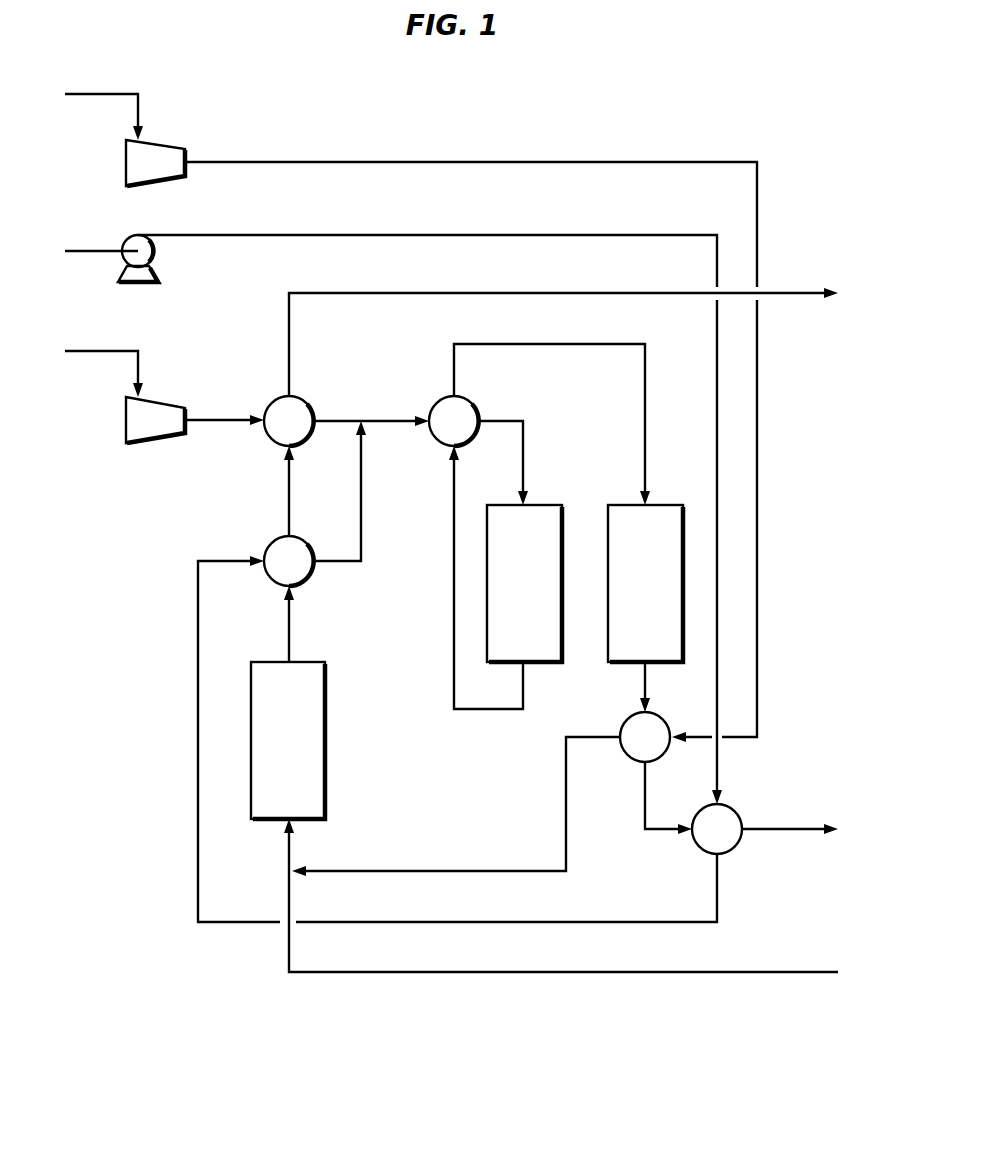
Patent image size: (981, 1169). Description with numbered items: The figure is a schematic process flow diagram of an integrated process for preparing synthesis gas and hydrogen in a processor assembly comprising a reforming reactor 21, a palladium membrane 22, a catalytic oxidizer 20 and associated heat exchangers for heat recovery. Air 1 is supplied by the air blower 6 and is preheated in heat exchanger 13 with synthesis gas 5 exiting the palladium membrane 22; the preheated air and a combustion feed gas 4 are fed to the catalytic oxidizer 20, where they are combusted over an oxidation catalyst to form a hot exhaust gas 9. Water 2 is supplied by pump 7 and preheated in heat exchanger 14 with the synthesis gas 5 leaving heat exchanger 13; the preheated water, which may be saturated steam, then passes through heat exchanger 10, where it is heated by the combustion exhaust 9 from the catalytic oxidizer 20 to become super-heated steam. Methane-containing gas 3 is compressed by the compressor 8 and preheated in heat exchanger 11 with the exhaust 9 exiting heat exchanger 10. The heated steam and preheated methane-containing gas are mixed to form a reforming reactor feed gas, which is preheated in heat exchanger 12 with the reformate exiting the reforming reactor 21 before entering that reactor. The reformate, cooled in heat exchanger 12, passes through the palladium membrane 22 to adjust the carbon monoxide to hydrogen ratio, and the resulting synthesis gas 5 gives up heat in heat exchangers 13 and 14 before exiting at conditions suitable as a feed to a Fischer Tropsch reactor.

The air 1 is at (88, 94).
The water 2 is at (88, 251).
The methane-containing gas 3 is at (88, 351).
The combustion feed gas 4 is at (795, 972).
The synthesis gas 5 is at (795, 829).
The air blower 6 is at (160, 152).
The pump 7 is at (150, 270).
The compressor 8 is at (160, 410).
The exhaust gas 9 is at (795, 293).
The heat exchanger 10 is at (289, 561).
The heat exchanger 11 is at (289, 421).
The heat exchanger 12 is at (454, 421).
The heat exchanger 13 is at (645, 737).
The heat exchanger 14 is at (717, 829).
The catalytic oxidizer 20 is at (288, 740).
The reforming reactor 21 is at (524, 583).
The palladium membrane 22 is at (645, 583).